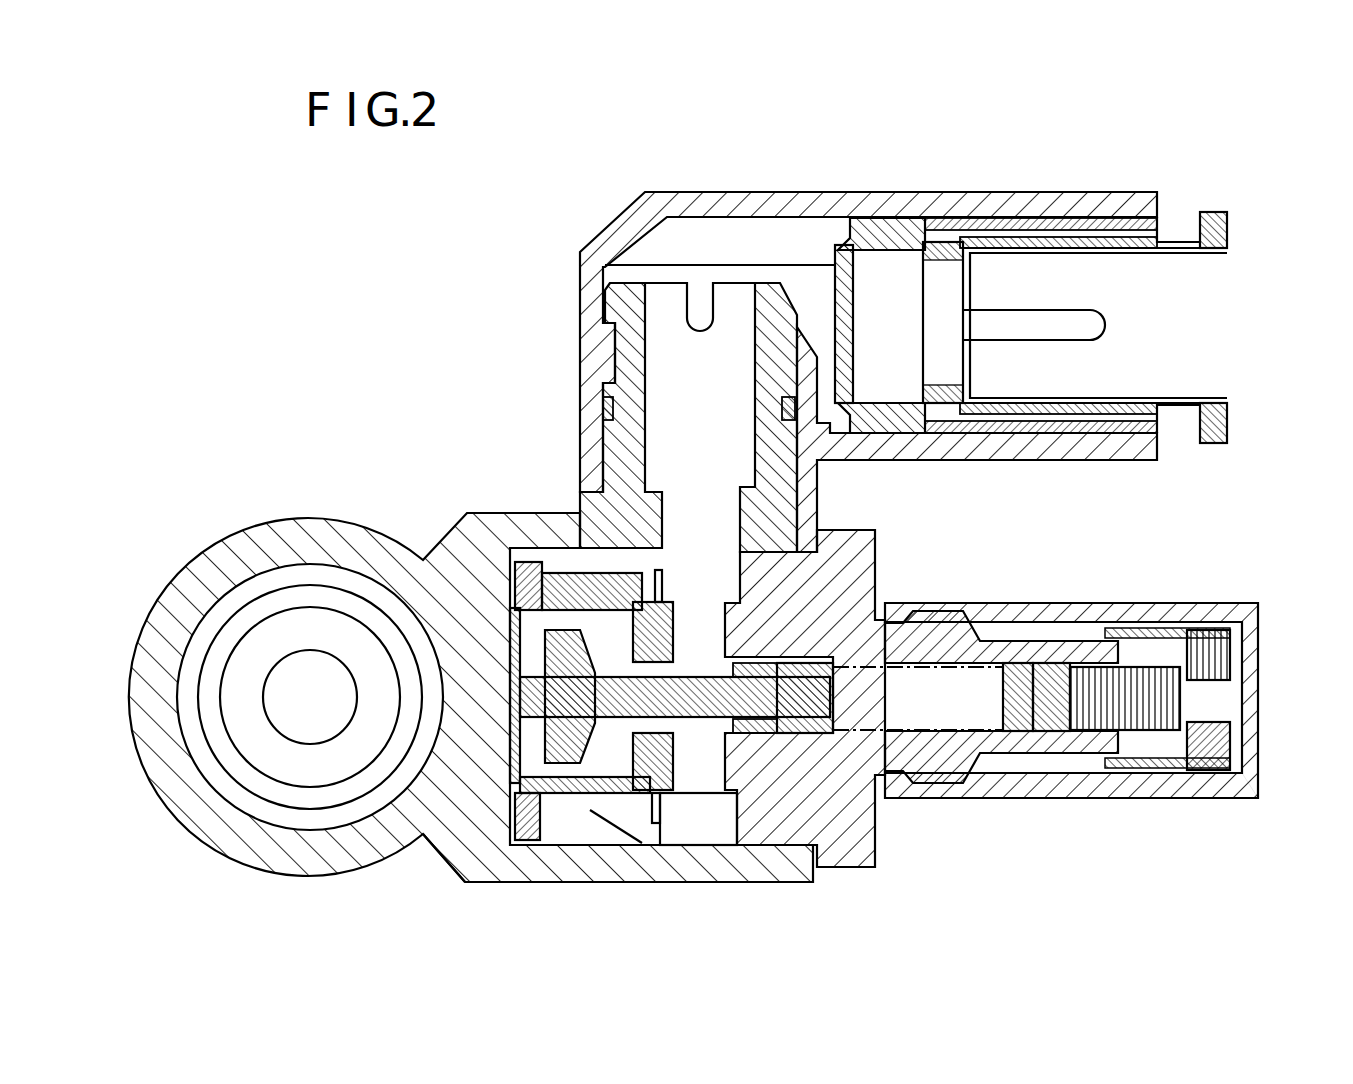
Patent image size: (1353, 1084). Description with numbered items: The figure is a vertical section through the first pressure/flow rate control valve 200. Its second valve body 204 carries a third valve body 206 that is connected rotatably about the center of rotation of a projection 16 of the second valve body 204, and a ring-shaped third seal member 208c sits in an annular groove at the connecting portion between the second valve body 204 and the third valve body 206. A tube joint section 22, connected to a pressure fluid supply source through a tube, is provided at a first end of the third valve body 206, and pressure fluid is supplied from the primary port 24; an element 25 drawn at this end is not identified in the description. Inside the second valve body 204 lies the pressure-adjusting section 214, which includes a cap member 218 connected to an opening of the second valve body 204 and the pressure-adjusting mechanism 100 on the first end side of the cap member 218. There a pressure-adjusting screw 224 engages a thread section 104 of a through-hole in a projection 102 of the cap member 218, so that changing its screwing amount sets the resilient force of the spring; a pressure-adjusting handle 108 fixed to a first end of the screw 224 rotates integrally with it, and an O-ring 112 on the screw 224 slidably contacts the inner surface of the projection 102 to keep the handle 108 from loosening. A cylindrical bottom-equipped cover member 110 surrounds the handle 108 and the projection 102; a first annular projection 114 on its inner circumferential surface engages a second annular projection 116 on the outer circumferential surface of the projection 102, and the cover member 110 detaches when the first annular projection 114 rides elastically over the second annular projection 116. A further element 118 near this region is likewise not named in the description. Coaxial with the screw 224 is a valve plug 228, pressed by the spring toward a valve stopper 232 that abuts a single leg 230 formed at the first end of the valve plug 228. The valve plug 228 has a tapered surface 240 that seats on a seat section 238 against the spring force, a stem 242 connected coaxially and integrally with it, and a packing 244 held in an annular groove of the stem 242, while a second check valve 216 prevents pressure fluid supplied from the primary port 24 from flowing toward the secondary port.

The first pressure/flow rate control valve 200 is at (990, 134).
The tube joint section 22 is at (1052, 214).
The retaining ring 25 is at (1210, 212).
The primary port 24 is at (1175, 395).
The third valve body 206 is at (745, 193).
The projection 16 is at (630, 348).
The third seal member 208c is at (603, 406).
The single leg 230 is at (510, 600).
The tapered surface 240 is at (643, 605).
The pressure-adjusting section 214 is at (708, 660).
The second annular projection 116 is at (928, 620).
The contact spring 118 is at (1008, 660).
The O-ring 112 is at (1045, 662).
The thread section 104 is at (1100, 666).
The pressure-adjusting mechanism 100 is at (1192, 602).
The pressure-adjusting handle 108 is at (607, 870).
The first annular projection 114 is at (892, 782).
The projection 102 is at (1030, 745).
The pressure-adjusting screw 224 is at (1138, 722).
The cover member 110 is at (1215, 790).
The seat section 238 is at (442, 848).
The valve stopper 232 is at (508, 770).
The second check valve 216 is at (575, 812).
The valve plug 228 is at (680, 760).
The stem 242 is at (780, 680).
The packing 244 is at (757, 740).
The cap member 218 is at (845, 850).
The second valve body 204 is at (613, 873).